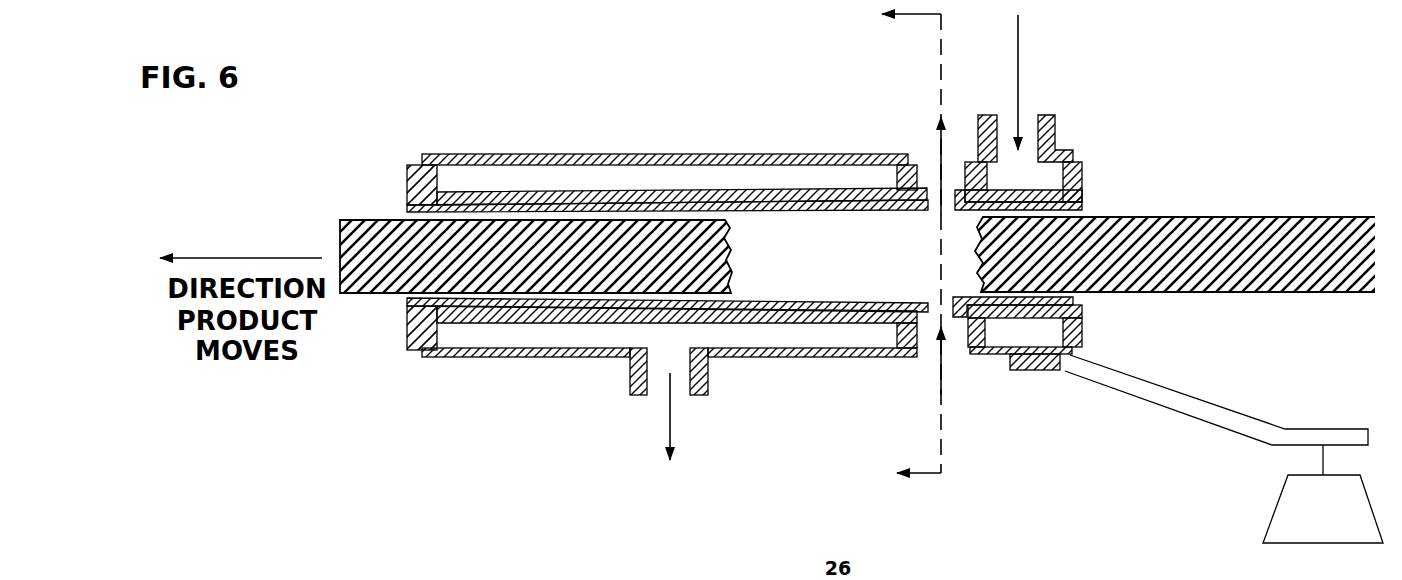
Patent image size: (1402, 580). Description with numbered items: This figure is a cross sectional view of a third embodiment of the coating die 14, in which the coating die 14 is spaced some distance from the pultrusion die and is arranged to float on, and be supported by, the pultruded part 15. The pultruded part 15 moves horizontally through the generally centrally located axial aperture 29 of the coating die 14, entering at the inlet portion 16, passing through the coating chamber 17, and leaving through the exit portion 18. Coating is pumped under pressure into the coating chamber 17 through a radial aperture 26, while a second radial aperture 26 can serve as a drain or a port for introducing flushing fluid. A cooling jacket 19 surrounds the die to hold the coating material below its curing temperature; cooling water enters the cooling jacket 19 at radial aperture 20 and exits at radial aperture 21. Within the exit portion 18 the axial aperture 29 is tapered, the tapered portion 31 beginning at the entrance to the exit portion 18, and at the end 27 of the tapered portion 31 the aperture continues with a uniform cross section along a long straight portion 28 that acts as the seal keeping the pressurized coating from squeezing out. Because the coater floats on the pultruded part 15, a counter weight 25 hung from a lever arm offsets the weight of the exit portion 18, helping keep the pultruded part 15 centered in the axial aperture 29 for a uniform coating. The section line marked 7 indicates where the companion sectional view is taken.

The section line 7- 7 is at (899, 244).
The coating die 14 is at (787, 356).
The pultruded part 15 is at (383, 282).
The inlet portion 16 is at (1073, 183).
The coating chamber 17 is at (945, 200).
The exit portion 18 is at (413, 207).
The cooling jacket 19 is at (520, 177).
The radial aperture 20 is at (1030, 122).
The radial aperture 21 is at (658, 388).
The counter weight 25 is at (1312, 518).
The radial aperture 26 is at (928, 156).
The end of the tapered portion 27 is at (665, 208).
The long straight portion 28 is at (515, 306).
The axial aperture 29 is at (824, 263).
The tapered portion 31 is at (800, 315).